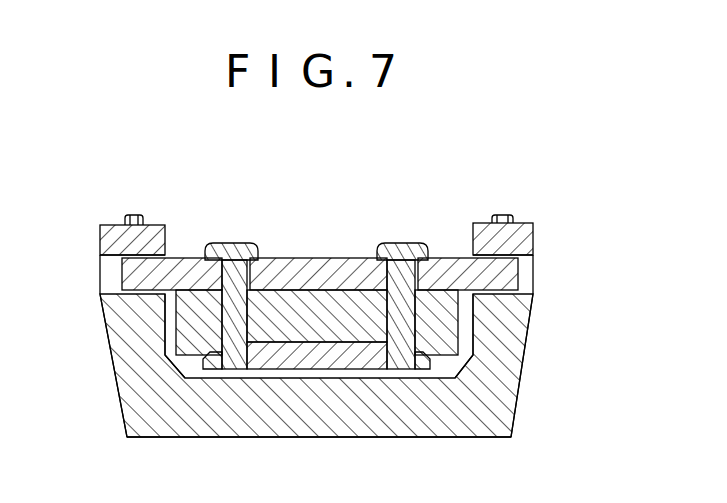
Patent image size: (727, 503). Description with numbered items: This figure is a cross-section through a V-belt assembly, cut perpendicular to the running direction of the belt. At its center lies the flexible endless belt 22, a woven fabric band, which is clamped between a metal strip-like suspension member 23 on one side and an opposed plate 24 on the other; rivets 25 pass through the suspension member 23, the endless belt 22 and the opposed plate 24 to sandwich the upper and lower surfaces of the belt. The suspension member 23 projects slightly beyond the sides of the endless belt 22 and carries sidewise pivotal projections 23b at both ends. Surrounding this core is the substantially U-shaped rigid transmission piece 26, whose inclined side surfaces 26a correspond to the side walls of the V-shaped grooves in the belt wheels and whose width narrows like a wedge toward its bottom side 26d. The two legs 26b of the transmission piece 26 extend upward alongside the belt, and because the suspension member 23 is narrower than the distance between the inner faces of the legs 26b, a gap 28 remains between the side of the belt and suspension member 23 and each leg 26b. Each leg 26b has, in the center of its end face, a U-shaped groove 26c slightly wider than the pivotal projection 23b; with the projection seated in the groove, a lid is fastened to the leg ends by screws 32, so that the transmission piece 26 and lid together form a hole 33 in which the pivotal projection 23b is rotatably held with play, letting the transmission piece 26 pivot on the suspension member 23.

The endless belt 22 is at (300, 300).
The suspension member 23 is at (340, 268).
The pivotal projection 23b is at (171, 272).
The opposed plate 24 is at (347, 360).
The rivet 25 is at (231, 255).
The transmission piece 26 is at (493, 422).
The side surface 26a is at (117, 395).
The leg 26b is at (117, 330).
The U-shaped groove 26c is at (112, 283).
The bottom side 26d is at (420, 422).
The gap 28 is at (168, 335).
The screw 32 is at (503, 214).
The hole 33 is at (534, 266).